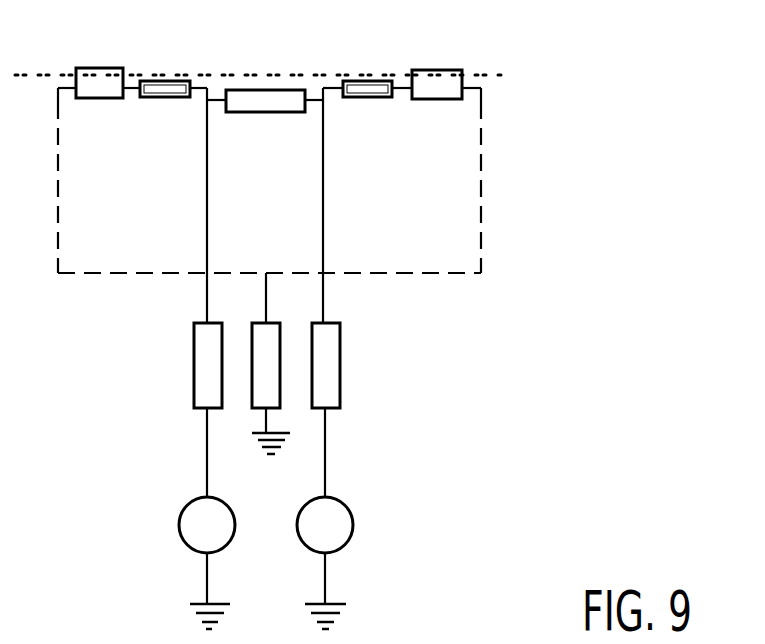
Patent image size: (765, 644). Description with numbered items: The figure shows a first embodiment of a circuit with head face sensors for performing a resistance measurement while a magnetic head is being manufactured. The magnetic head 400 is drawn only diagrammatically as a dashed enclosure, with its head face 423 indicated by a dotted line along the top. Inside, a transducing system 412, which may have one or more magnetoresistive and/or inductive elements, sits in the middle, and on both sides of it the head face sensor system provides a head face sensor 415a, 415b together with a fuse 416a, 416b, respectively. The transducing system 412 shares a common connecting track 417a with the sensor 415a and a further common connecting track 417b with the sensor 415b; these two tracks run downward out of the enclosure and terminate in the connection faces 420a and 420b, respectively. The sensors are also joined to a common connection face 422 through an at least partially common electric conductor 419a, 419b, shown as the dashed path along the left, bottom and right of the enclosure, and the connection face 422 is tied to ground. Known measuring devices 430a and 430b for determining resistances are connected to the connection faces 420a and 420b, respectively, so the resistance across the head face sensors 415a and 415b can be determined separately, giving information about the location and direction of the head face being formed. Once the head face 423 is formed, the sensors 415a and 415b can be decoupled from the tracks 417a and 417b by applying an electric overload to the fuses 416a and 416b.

The head face 423 is at (498, 73).
The magnetic head 400 is at (432, 261).
The electric conductor 419a is at (60, 213).
The electric conductor 419b is at (484, 213).
The head face sensor 415a is at (99, 88).
The head face sensor 415b is at (435, 90).
The fuse 416a is at (168, 93).
The fuse 416b is at (373, 92).
The transducing system 412 is at (270, 100).
The common connecting track 417a is at (208, 210).
The further common connecting track 417b is at (325, 207).
The connection face 420a is at (198, 360).
The connection face 420b is at (327, 369).
The common connection face 422 is at (262, 373).
The measuring device 430a is at (181, 512).
The measuring device 430b is at (353, 518).